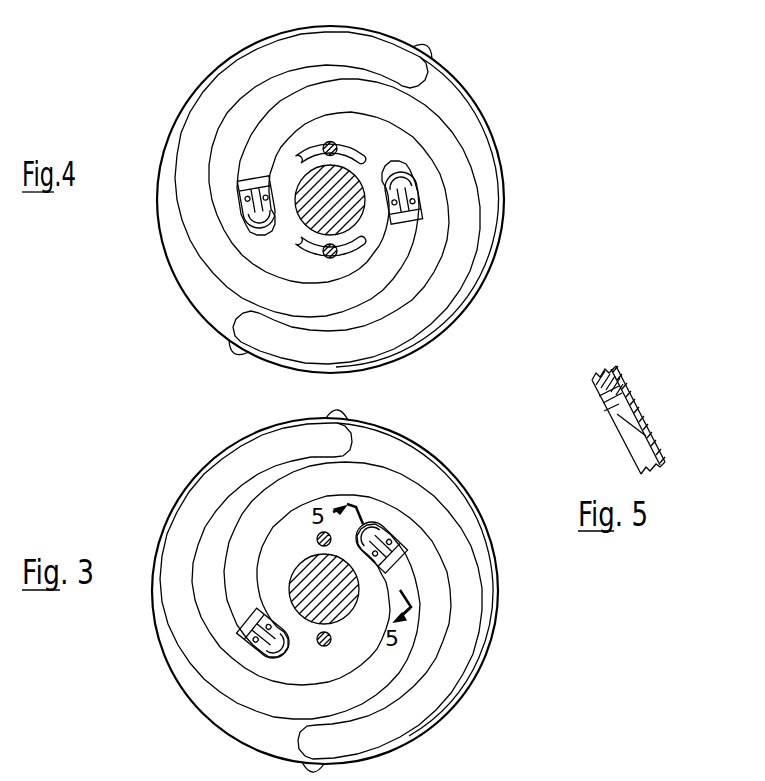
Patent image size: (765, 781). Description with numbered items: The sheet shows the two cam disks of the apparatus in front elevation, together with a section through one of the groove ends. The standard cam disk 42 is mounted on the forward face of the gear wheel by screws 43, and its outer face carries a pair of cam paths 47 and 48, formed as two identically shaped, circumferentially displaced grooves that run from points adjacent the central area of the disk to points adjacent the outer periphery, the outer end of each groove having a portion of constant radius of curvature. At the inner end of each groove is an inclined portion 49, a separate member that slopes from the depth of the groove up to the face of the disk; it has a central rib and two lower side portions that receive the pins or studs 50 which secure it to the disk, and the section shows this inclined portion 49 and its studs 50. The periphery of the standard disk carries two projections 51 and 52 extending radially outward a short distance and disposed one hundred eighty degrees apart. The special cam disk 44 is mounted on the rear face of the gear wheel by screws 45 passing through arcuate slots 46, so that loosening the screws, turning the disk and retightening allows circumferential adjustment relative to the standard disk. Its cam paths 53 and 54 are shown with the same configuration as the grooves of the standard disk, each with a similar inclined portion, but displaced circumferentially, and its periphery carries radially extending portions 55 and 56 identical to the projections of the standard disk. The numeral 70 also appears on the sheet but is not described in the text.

In FIG. 3, the cam disk 42 is at (442, 477).
In FIG. 3, the screws 43 is at (316, 541).
In FIG. 4, the cam disk 44 is at (501, 184).
In FIG. 4, the screws 45 is at (333, 138).
In FIG. 4, the arcuate slots 46 is at (366, 163).
In FIG. 3, the cam path 47 is at (468, 627).
In FIG. 3, the cam path 48 is at (188, 517).
In FIG. 3, the inclined portion 49 is at (381, 533).
In FIG. 5, the inclined portion 49 is at (607, 406).
In FIG. 3, the pins or studs 50 is at (392, 547).
In FIG. 5, the pins or studs 50 is at (638, 414).
In FIG. 3, the projection 51 is at (332, 413).
In FIG. 3, the projection 52 is at (305, 766).
In FIG. 4, the cam path 53 is at (463, 247).
In FIG. 4, the cam path 54 is at (218, 108).
In FIG. 4, the radially extending portion 55 is at (432, 54).
In FIG. 4, the radially extending portion 56 is at (230, 357).
In FIG. 3, the housing 70 is at (108, 780).